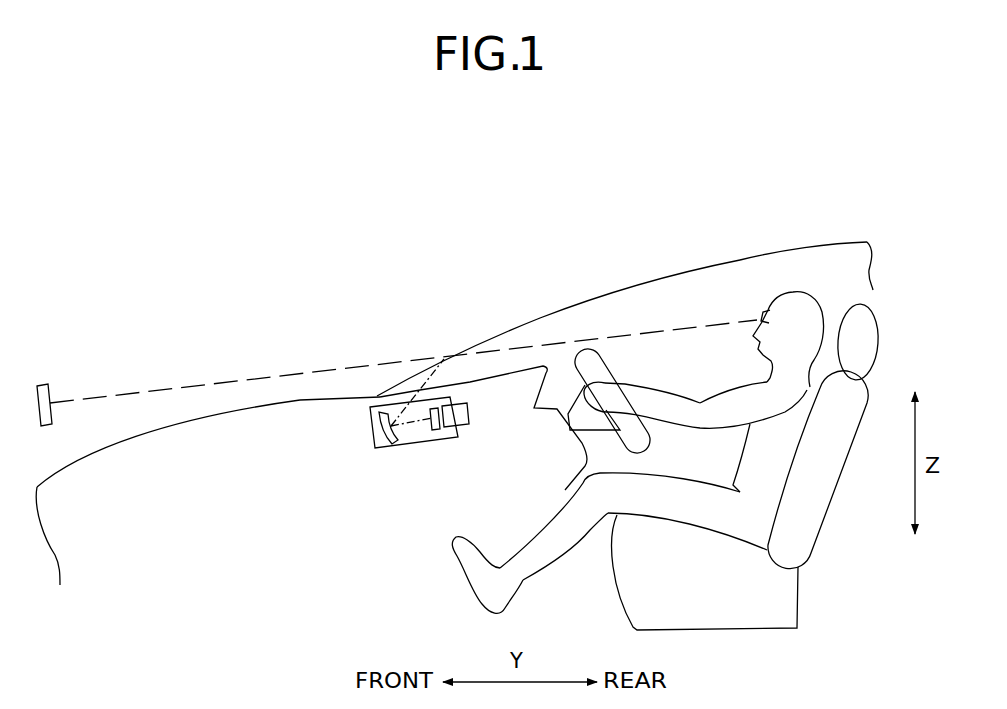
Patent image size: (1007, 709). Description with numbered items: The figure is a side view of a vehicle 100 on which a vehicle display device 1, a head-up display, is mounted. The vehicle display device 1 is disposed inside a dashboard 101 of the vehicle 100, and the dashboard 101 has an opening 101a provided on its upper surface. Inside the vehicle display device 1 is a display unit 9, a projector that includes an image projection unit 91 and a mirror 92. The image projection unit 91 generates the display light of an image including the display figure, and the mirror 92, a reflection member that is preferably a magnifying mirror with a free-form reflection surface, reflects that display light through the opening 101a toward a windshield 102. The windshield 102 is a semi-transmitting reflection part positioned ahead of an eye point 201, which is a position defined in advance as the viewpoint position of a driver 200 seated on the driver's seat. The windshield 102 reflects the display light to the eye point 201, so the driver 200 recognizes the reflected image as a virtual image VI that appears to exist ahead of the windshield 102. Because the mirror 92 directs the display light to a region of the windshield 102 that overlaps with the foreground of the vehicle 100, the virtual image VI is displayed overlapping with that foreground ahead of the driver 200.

The vehicle display device 1 is at (390, 387).
The display unit 9 is at (416, 411).
The image projection unit 91 is at (448, 440).
The mirror 92 is at (380, 452).
The vehicle 100 is at (705, 200).
The dashboard 101 is at (512, 370).
The opening 101a is at (400, 400).
The windshield 102 is at (480, 338).
The driver 200 is at (652, 398).
The eye point 201 is at (767, 316).
The virtual image VI is at (42, 385).